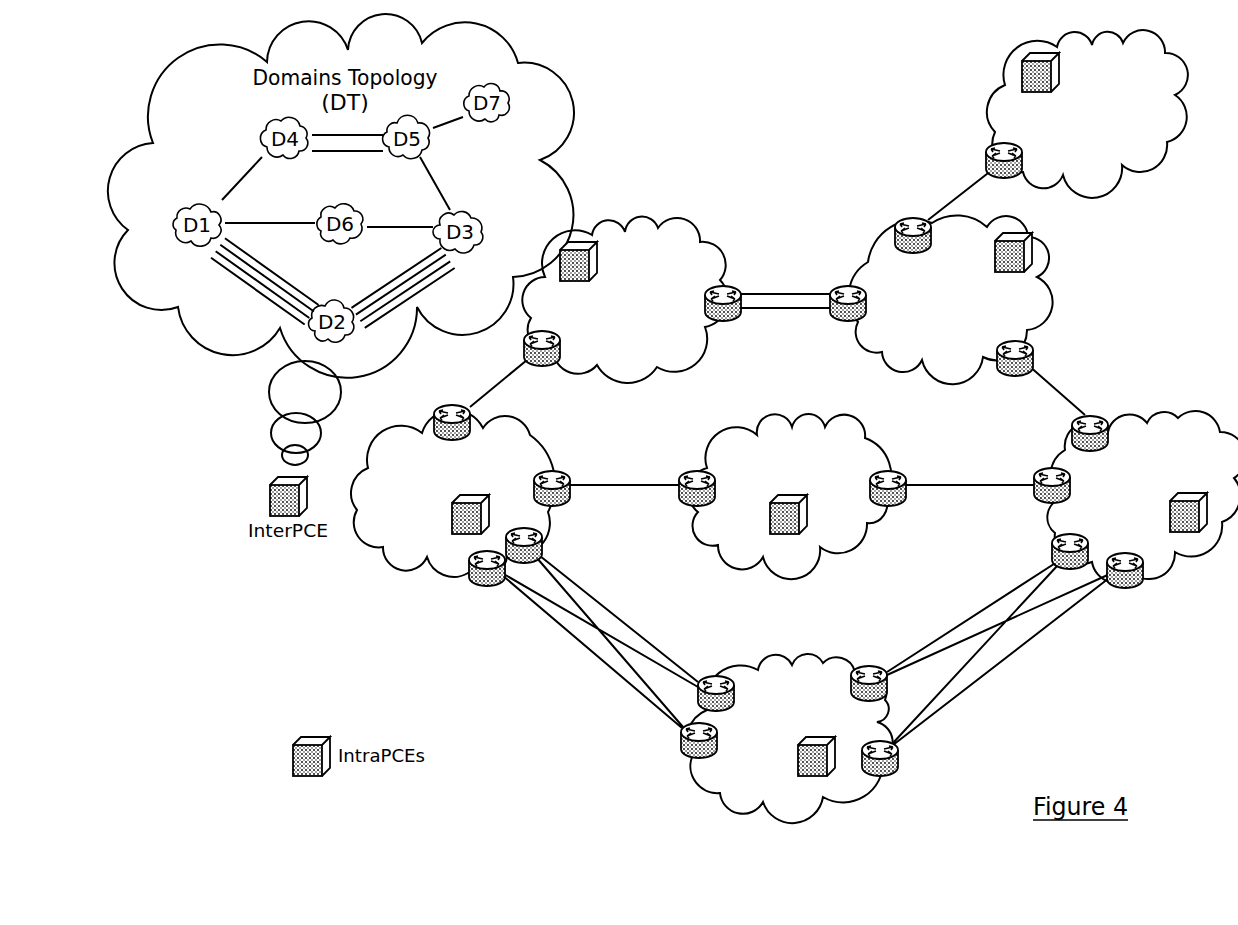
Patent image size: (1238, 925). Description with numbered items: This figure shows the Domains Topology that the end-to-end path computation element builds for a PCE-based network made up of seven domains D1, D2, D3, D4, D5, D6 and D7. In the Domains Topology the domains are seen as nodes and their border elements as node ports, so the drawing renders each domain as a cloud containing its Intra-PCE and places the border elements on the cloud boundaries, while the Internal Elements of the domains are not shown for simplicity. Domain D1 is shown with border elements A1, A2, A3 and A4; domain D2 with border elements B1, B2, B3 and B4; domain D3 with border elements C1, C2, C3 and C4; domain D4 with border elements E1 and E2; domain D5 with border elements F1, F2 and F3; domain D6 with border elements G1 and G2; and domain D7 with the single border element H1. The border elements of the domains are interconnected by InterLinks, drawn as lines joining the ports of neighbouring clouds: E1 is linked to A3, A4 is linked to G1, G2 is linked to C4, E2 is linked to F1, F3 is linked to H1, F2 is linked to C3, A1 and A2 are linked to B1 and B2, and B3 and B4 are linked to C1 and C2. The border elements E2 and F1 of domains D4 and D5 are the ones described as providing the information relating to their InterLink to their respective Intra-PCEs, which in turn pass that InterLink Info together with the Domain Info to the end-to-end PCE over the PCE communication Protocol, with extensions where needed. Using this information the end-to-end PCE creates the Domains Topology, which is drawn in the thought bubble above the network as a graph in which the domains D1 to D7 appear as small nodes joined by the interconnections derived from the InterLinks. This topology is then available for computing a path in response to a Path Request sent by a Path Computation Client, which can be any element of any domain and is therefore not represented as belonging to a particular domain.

The domain D1 is at (453, 494).
The domain D2 is at (790, 738).
The domain D3 is at (1142, 497).
The domain D4 is at (625, 300).
The domain D5 is at (951, 299).
The domain D6 is at (789, 496).
The domain D7 is at (1087, 114).
The border router A1 is at (541, 544).
The border router A2 is at (477, 582).
The border router A3 is at (451, 406).
The border router A4 is at (563, 473).
The border router B1 is at (714, 679).
The border router B2 is at (681, 742).
The border router B3 is at (874, 668).
The border router B4 is at (897, 765).
The border router C1 is at (1052, 551).
The border router C2 is at (1129, 584).
The border router C3 is at (1094, 419).
The border router C4 is at (1039, 474).
The border router E1 is at (522, 348).
The border element E2 is at (726, 316).
The border element F1 is at (843, 316).
The border router F2 is at (1032, 358).
The border router F3 is at (913, 221).
The border router G1 is at (684, 497).
The border router G2 is at (898, 503).
The border router H1 is at (988, 157).